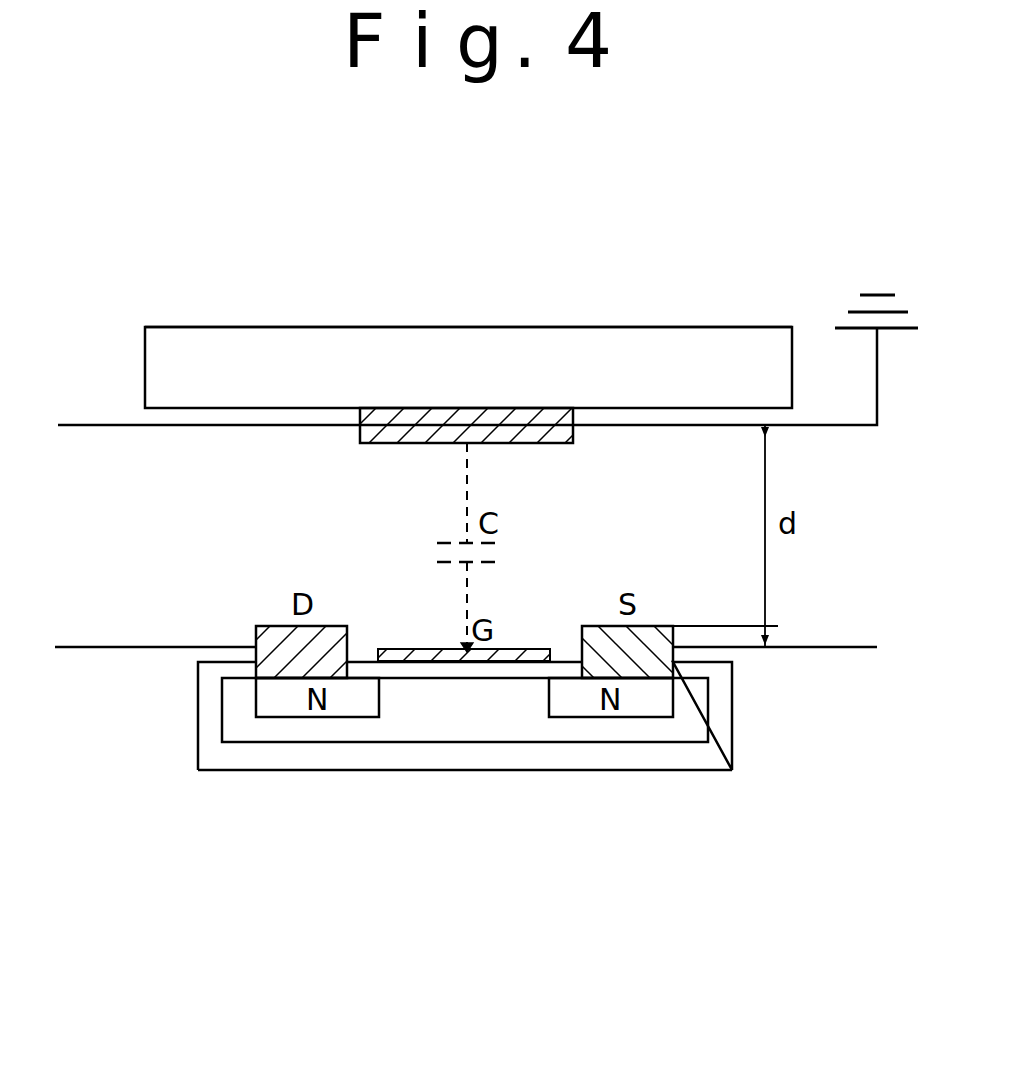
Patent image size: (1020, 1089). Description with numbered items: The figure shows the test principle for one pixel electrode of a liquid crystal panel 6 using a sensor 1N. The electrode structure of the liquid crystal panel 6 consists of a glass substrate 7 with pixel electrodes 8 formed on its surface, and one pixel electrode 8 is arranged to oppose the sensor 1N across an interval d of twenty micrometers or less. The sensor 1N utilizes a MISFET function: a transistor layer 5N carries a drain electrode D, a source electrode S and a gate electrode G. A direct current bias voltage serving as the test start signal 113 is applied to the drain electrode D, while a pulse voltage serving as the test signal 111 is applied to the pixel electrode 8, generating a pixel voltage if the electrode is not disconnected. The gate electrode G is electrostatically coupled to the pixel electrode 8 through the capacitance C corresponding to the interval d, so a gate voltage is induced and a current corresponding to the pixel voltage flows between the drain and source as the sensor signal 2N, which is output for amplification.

The liquid crystal panel 6 is at (490, 315).
The glass substrate 7 is at (658, 360).
The pixel electrode 8 is at (407, 423).
The test signal 111 is at (95, 425).
The test start signal 113 is at (92, 647).
The sensor signal 2N is at (843, 647).
The transistor layer 5N is at (387, 742).
The sensor 1N is at (645, 782).